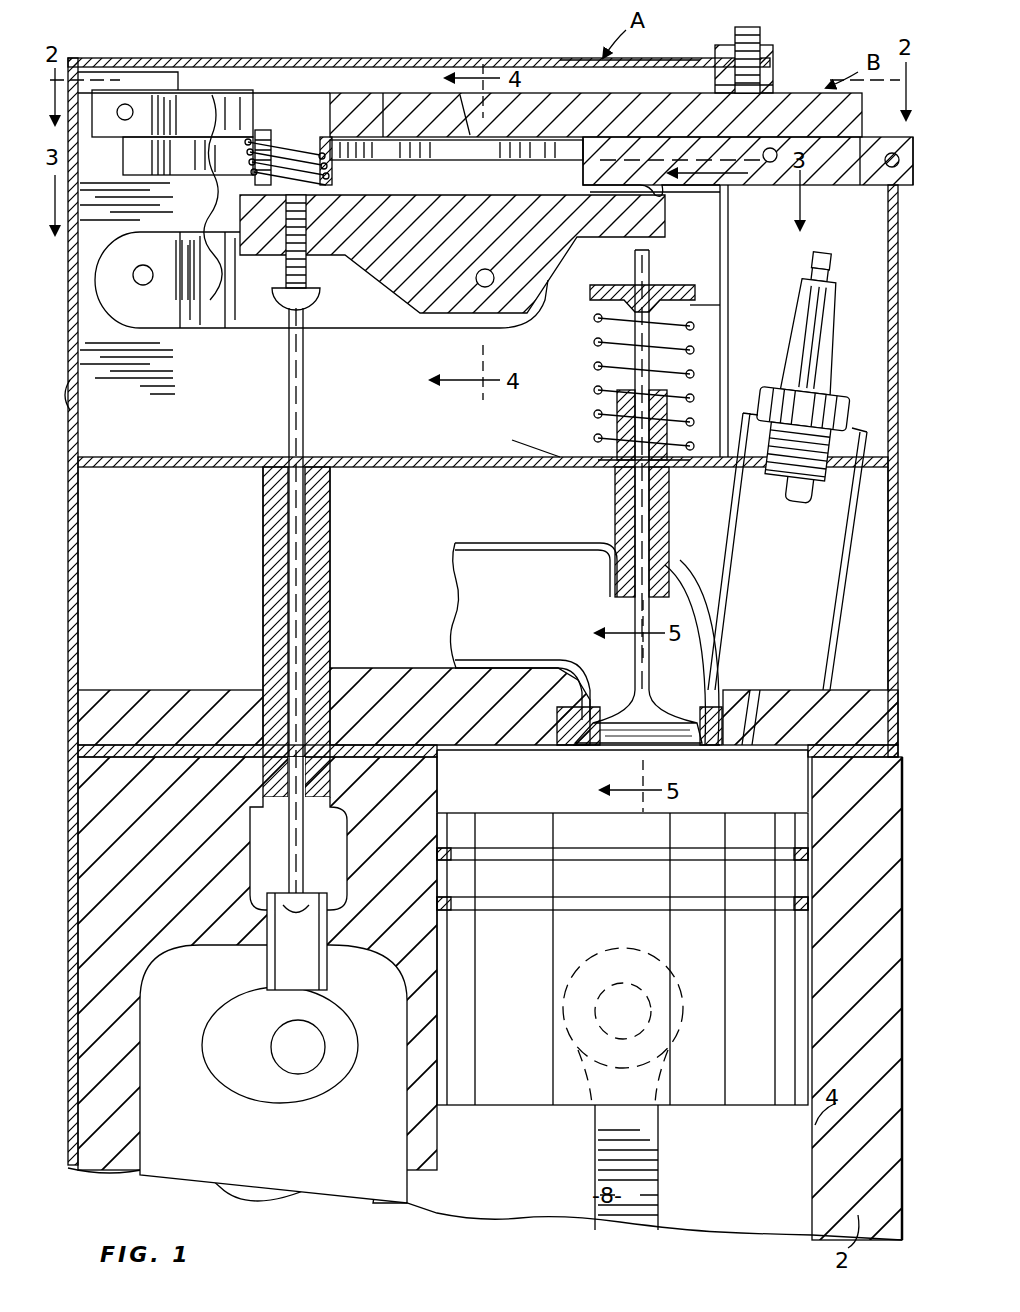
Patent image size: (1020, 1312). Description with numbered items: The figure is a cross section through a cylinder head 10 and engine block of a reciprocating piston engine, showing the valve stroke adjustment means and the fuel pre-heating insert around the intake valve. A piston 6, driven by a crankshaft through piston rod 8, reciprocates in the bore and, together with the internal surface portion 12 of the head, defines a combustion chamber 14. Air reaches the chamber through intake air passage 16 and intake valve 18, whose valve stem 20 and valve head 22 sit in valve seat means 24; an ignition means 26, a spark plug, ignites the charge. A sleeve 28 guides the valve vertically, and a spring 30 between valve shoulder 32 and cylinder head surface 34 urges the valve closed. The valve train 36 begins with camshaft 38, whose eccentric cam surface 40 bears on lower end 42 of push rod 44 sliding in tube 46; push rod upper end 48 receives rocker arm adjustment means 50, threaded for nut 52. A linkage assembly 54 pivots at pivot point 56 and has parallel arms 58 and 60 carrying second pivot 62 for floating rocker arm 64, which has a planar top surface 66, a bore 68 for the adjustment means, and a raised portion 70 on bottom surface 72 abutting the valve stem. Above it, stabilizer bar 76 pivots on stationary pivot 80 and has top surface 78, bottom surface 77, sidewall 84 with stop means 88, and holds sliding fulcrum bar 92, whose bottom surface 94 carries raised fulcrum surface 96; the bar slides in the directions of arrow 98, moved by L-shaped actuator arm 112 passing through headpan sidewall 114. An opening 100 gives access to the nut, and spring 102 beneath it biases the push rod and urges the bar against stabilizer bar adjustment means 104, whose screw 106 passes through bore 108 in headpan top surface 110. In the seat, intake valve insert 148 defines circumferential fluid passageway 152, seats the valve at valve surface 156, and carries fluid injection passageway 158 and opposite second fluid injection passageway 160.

The cylinder head 10 is at (100, 735).
The internal surface portion 12 is at (452, 757).
The combustion chamber 14 is at (527, 792).
The intake air passage 16 is at (533, 631).
The intake valve 18 is at (630, 612).
The valve stem 20 is at (650, 483).
The valve head 22 is at (640, 722).
The valve seat means 24 is at (728, 758).
The ignition means 26 is at (815, 355).
The sleeve 28 is at (660, 540).
The spring 30 is at (695, 328).
The valve shoulder 32 is at (700, 286).
The cylinder head surface 34 is at (530, 457).
The valve train 36 is at (283, 380).
The camshaft 38 is at (318, 1058).
The eccentric cam surface 40 is at (235, 1002).
The lower end of push rod 42 is at (325, 968).
The push rod 44 is at (330, 548).
The tube 46 is at (330, 585).
The push rod upper end 48 is at (318, 302).
The rocker arm adjustment means 50 is at (306, 258).
The nut 52 is at (286, 132).
The linkage assembly 54 is at (415, 340).
The pivot point 56 is at (145, 287).
The parallel arm 58 is at (212, 300).
The parallel arm 60 is at (258, 300).
The second pivot 62 is at (495, 286).
The floating rocker arm 64 is at (462, 248).
The top surface 66 is at (724, 190).
The bore 68 is at (245, 220).
The raised portion 70 is at (650, 262).
The rocker arm bottom surface 72 is at (580, 298).
The stabilizer bar 76 is at (650, 115).
The bottom surface of stabilizer bar 77 is at (383, 140).
The top surface 78 is at (528, 93).
The stationary pivot 80 is at (125, 104).
The sidewall 84 is at (812, 180).
The stop means 88 is at (380, 162).
The sliding fulcrum bar 92 is at (880, 185).
The bottom surface 94 is at (860, 165).
The raised fulcrum surface 96 is at (583, 178).
The arrow 98 is at (773, 163).
The opening 100 is at (255, 138).
The spring 102 is at (322, 137).
The stabilizer bar adjustment means 104 is at (778, 55).
The screw 106 is at (762, 35).
The bore 108 is at (775, 80).
The headpan top surface 110 is at (583, 58).
The L-shaped actuator arm 112 is at (892, 167).
The sidewall of headpan 114 is at (72, 400).
The intake valve insert 148 is at (556, 692).
The circumferential fluid passageway 152 is at (735, 660).
The valve surface 156 is at (620, 735).
The fluid injection passageway 158 is at (752, 700).
The second fluid injection passageway 160 is at (440, 692).
The piston 6 is at (622, 959).
The piston rod 8 is at (626, 1167).